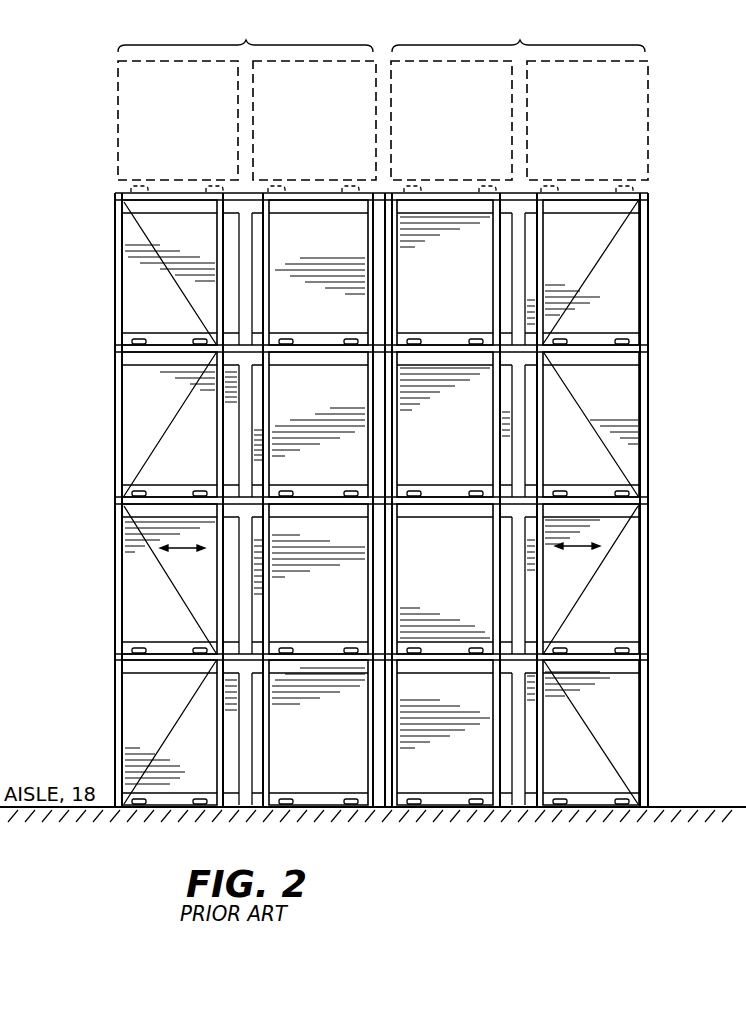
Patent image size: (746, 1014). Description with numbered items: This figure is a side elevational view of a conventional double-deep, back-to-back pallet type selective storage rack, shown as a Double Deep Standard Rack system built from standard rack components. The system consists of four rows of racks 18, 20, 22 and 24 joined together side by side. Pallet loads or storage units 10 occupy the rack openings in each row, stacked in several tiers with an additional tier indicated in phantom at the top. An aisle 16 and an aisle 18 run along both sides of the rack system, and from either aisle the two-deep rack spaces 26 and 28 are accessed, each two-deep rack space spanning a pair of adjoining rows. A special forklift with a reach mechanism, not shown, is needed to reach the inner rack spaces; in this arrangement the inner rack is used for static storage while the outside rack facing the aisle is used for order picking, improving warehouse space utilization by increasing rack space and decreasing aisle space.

The storage container 10 is at (573, 740).
The aisle 16 is at (698, 794).
The aisle 18 is at (648, 268).
The row of racks 20 is at (397, 261).
The row of racks 22 is at (268, 243).
The row of racks 24 is at (122, 302).
The two-deep rack space 26 is at (518, 35).
The two-deep rack space 28 is at (245, 35).